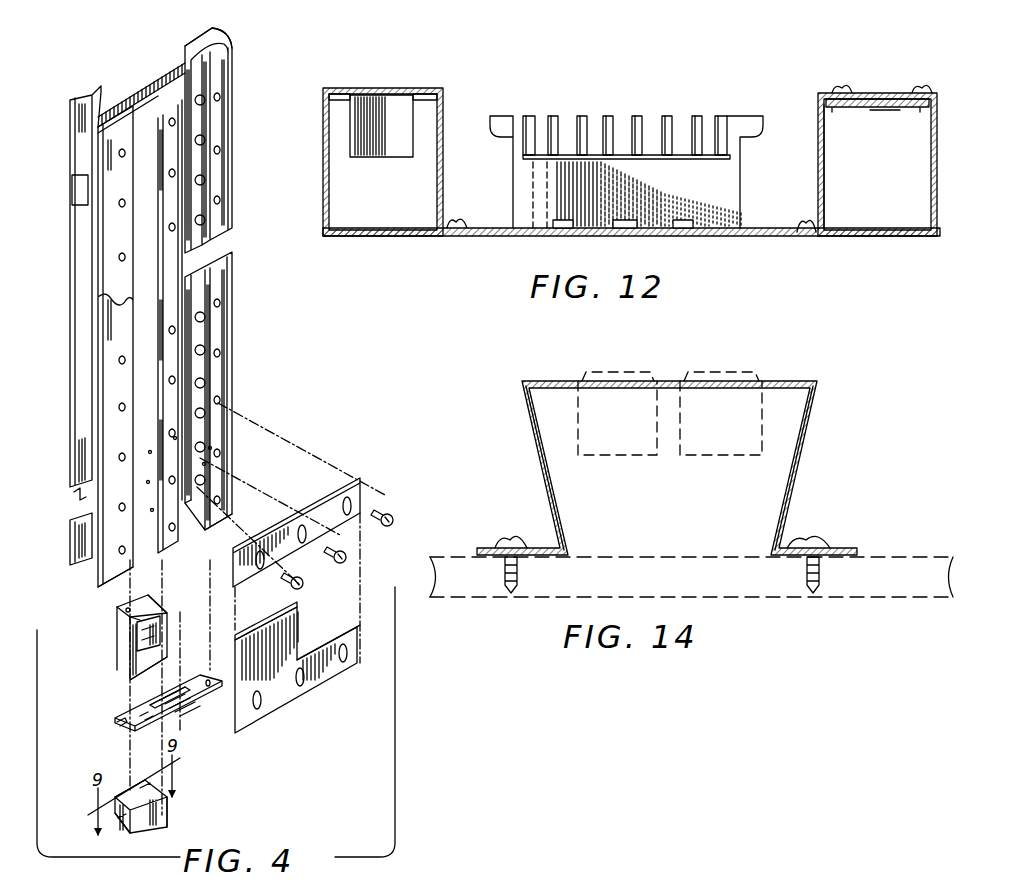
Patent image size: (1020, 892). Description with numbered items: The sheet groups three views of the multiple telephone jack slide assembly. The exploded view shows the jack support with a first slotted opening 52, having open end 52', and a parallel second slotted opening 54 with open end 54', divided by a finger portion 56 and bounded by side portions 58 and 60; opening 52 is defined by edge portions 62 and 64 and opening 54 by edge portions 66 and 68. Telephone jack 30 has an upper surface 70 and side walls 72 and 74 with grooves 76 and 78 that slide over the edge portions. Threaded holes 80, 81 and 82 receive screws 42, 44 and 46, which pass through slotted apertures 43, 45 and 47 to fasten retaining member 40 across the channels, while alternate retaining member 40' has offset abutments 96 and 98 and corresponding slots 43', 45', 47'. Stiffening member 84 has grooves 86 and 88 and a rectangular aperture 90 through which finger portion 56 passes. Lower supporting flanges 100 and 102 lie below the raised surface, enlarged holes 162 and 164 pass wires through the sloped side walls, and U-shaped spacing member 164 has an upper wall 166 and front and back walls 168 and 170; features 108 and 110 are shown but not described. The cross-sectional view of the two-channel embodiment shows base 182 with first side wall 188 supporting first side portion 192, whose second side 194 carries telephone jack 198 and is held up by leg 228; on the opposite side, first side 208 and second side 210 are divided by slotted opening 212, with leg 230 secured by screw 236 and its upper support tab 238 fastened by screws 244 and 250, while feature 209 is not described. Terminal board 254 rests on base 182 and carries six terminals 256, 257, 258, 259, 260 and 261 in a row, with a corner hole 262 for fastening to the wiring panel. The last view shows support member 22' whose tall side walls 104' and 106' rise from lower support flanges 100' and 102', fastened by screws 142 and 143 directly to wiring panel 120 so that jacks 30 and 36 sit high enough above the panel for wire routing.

In FIG. 12, the first side wall 188 is at (324, 135).
In FIG. 12, the first side portion 192 is at (330, 104).
In FIG. 12, the second side 194 is at (443, 102).
In FIG. 12, the telephone jack 198 is at (392, 90).
In FIG. 12, the supporting leg 228 is at (490, 127).
In FIG. 12, the wire gripping terminal 256 is at (553, 116).
In FIG. 12, the wire gripping terminal 257 is at (582, 116).
In FIG. 12, the wire gripping terminal 258 is at (608, 116).
In FIG. 12, the wire gripping terminal 259 is at (637, 116).
In FIG. 12, the wire gripping terminal 260 is at (667, 116).
In FIG. 12, the wire gripping terminal 261 is at (697, 116).
In FIG. 12, the terminal board 254 is at (656, 191).
In FIG. 12, the hole 262 is at (533, 180).
In FIG. 12, the right housing wall 209 is at (937, 144).
In FIG. 12, the upper support tab 238 is at (868, 96).
In FIG. 12, the screw 244 is at (842, 84).
In FIG. 12, the screw 250 is at (925, 85).
In FIG. 12, the screw 236 is at (805, 218).
In FIG. 12, the supporting leg 230 is at (818, 132).
In FIG. 12, the base 182 is at (790, 232).
In FIG. 12, the second side 210 is at (845, 108).
In FIG. 12, the first side 208 is at (915, 107).
In FIG. 12, the second slotted opening 212 is at (900, 114).
In FIG. 14, the support member 22' is at (680, 431).
In FIG. 14, the side wall 104' is at (574, 468).
In FIG. 14, the side wall 106' is at (767, 468).
In FIG. 14, the telephone jack 30 is at (627, 417).
In FIG. 4, the telephone jack 30 is at (130, 663).
In FIG. 14, the telephone jack 36 is at (739, 417).
In FIG. 14, the wiring panel 120 is at (682, 587).
In FIG. 14, the screw 142 is at (500, 548).
In FIG. 14, the screw 143 is at (838, 548).
In FIG. 14, the lower support flange 100' is at (518, 528).
In FIG. 14, the lower support flange 102' is at (819, 525).
In FIG. 4, the lower supporting flange 100 is at (83, 272).
In FIG. 4, the notch 108 is at (66, 192).
In FIG. 4, the strip segment 110 is at (62, 522).
In FIG. 4, the first side portion 58 is at (98, 328).
In FIG. 4, the first slotted opening 52 is at (125, 351).
In FIG. 4, the open end 52' is at (99, 588).
In FIG. 4, the finger portion 56 is at (168, 85).
In FIG. 4, the second side portion 60 is at (218, 80).
In FIG. 4, the lower supporting flange 102 is at (228, 36).
In FIG. 4, the enlarged hole 162 is at (212, 188).
In FIG. 4, the spacing member 164 is at (207, 230).
In FIG. 4, the second slotted opening 54 is at (232, 396).
In FIG. 4, the threaded hole 82 is at (217, 397).
In FIG. 4, the threaded hole 80 is at (150, 453).
In FIG. 4, the threaded hole 81 is at (175, 438).
In FIG. 4, the edge portion 68 is at (212, 448).
In FIG. 4, the edge portion 66 is at (205, 466).
In FIG. 4, the edge portion 62 is at (148, 483).
In FIG. 4, the edge portion 64 is at (152, 511).
In FIG. 4, the open end 54' is at (210, 561).
In FIG. 4, the retaining member 40 is at (302, 514).
In FIG. 4, the slotted aperture 43 is at (255, 538).
In FIG. 4, the slotted aperture 45 is at (294, 511).
In FIG. 4, the slotted aperture 47 is at (372, 496).
In FIG. 4, the screw 42 is at (300, 578).
In FIG. 4, the screw 44 is at (344, 563).
In FIG. 4, the screw 46 is at (388, 527).
In FIG. 4, the retaining member 40' is at (310, 667).
In FIG. 4, the first abutment 96 is at (270, 622).
In FIG. 4, the second abutment 98 is at (318, 636).
In FIG. 4, the slot 43' is at (282, 719).
In FIG. 4, the slot 45' is at (316, 695).
In FIG. 4, the slot 47' is at (365, 659).
In FIG. 4, the side wall 72 is at (118, 641).
In FIG. 4, the groove 76 is at (118, 612).
In FIG. 4, the groove 78 is at (158, 597).
In FIG. 4, the side wall 74 is at (160, 597).
In FIG. 4, the upper surface 70 is at (138, 677).
In FIG. 4, the stiffening member 84 is at (182, 741).
In FIG. 4, the groove 86 is at (116, 724).
In FIG. 4, the groove 88 is at (209, 689).
In FIG. 4, the rectangularly shaped aperture 90 is at (186, 707).
In FIG. 4, the upper wall 166 is at (168, 801).
In FIG. 4, the front wall 168 is at (114, 788).
In FIG. 4, the back wall 170 is at (126, 827).